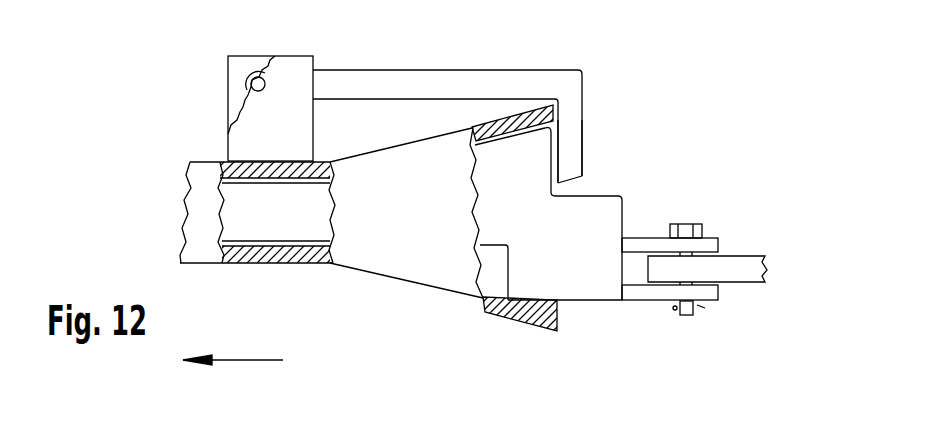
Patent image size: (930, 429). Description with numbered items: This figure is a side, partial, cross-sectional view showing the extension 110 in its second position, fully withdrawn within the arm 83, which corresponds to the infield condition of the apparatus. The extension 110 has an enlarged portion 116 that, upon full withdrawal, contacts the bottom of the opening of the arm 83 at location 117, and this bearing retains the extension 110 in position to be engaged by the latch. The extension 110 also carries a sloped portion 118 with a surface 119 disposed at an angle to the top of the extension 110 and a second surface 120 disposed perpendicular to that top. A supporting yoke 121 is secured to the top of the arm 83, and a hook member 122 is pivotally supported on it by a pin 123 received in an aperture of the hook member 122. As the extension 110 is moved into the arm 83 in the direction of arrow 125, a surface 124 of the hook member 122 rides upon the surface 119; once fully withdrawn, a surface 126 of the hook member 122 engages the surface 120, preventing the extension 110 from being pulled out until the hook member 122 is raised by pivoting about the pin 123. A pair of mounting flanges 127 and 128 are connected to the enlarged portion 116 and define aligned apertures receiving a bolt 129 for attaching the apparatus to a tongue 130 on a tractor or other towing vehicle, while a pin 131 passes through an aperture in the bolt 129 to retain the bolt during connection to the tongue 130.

The arm 83 is at (370, 265).
The extension 110 is at (238, 229).
The enlarged portion 116 is at (560, 301).
The location 117 is at (507, 318).
The sloped portion 118 is at (540, 145).
The surface 119 is at (543, 106).
The second surface 120 is at (558, 168).
The supporting yoke 121 is at (228, 137).
The hook member 122 is at (583, 123).
The pin 123 is at (248, 87).
The surface 124 is at (568, 182).
The arrow 125 is at (262, 360).
The surface 126 is at (477, 232).
The mounting flange 127 is at (720, 240).
The mounting flange 128 is at (645, 301).
The bolt 129 is at (700, 224).
The tongue 130 is at (750, 283).
The pin 131 is at (700, 314).